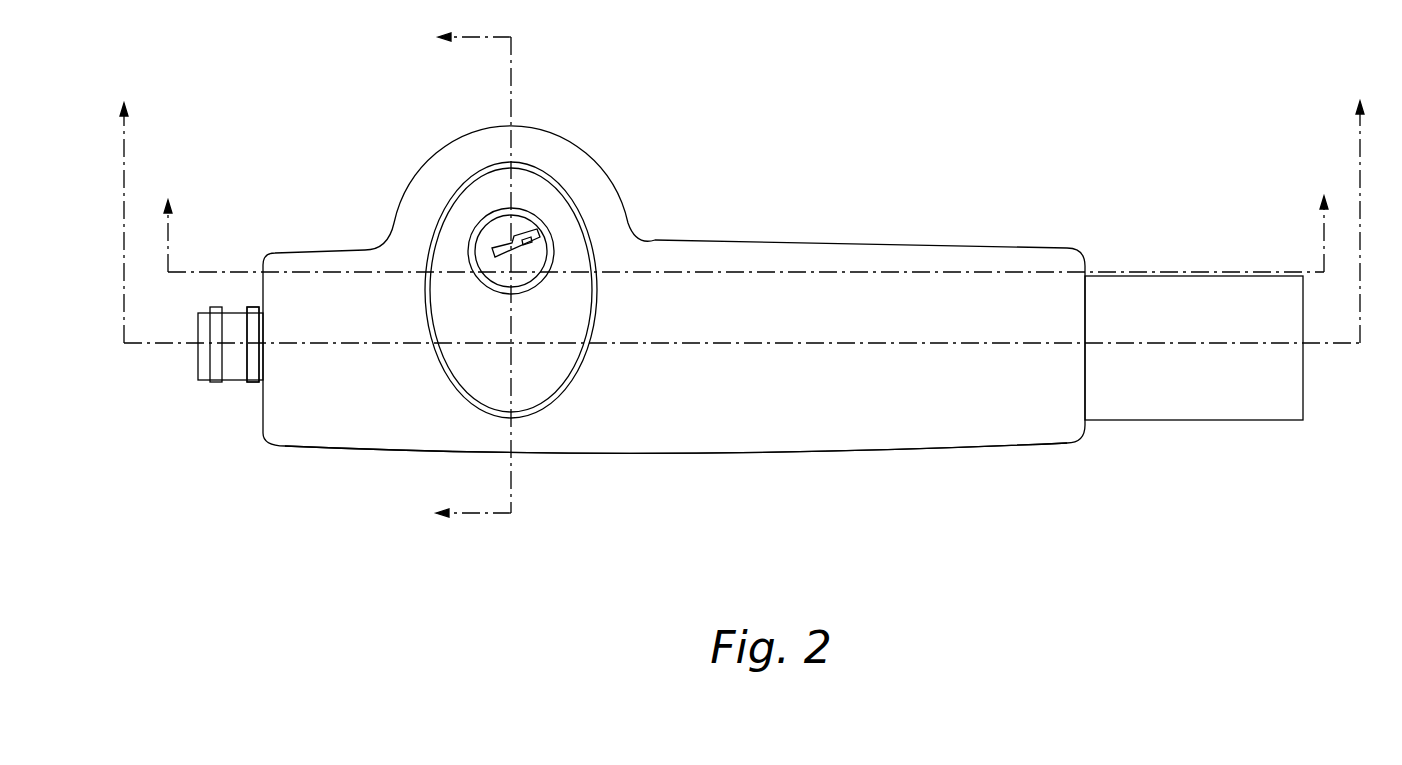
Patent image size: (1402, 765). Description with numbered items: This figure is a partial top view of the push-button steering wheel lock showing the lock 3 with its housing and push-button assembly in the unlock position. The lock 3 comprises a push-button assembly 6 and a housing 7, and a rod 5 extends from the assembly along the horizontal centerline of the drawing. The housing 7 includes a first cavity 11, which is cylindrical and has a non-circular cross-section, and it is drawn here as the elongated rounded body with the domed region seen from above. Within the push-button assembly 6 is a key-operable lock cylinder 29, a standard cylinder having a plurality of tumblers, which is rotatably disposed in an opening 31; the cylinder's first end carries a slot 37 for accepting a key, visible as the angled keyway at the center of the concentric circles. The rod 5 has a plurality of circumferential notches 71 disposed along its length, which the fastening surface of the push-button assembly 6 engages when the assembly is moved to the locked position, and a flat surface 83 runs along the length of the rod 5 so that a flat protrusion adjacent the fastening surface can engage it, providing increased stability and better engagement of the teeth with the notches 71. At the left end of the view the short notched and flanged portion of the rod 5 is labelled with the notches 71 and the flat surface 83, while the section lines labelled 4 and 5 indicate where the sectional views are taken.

The lock 3 is at (700, 238).
The section line 4- 4 is at (744, 234).
The rod 5 is at (473, 281).
The push-button assembly 6 is at (456, 188).
The housing 7 is at (810, 435).
The first cavity 11 is at (433, 228).
The key-operable lock cylinder 29 is at (497, 227).
The opening 31 is at (538, 280).
The slot 37 is at (527, 218).
The circumferential notches 71 is at (230, 327).
The flat surface 83 is at (230, 380).